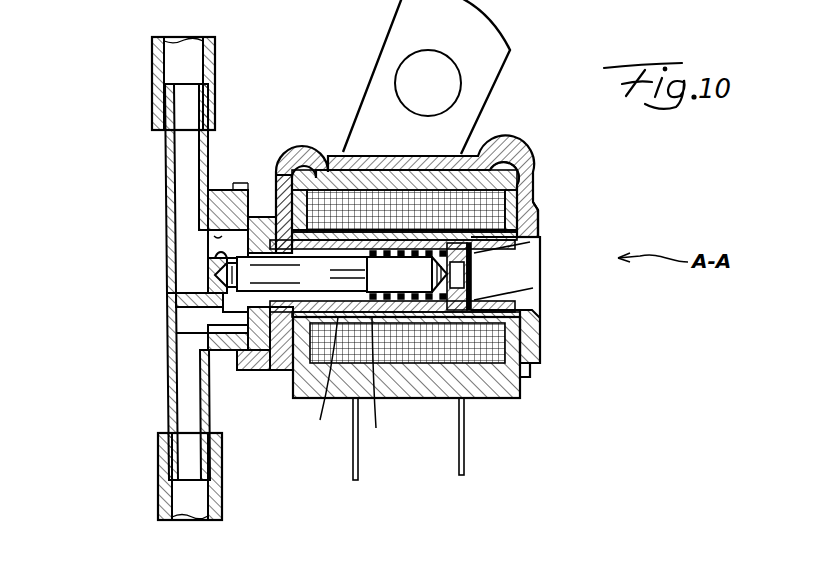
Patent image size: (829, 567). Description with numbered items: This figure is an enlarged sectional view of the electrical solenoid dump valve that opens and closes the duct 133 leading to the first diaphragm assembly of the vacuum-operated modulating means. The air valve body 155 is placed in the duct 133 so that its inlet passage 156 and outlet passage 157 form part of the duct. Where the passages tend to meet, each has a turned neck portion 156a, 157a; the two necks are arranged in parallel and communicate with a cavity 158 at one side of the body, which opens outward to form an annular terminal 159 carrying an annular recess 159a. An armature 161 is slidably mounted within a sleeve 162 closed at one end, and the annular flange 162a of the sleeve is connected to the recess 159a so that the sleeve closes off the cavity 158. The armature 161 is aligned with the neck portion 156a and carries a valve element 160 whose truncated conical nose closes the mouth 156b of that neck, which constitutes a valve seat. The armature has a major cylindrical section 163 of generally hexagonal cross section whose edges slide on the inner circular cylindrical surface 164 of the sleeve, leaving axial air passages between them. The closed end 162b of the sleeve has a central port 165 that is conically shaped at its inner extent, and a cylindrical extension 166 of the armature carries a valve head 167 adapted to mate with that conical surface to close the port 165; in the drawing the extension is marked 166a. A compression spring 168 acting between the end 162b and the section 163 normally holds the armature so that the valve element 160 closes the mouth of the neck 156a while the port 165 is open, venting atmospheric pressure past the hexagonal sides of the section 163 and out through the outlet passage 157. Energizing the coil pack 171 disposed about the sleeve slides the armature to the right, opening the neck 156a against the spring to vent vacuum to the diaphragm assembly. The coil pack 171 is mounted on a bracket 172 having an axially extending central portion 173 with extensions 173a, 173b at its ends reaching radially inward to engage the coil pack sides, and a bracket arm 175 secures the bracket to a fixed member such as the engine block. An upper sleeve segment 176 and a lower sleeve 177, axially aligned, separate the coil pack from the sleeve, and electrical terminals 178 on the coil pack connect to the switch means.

The duct 133 is at (153, 59).
The air valve body 155 is at (166, 157).
The inlet passage 156 is at (208, 208).
The turned neck portion of inlet passage 156a is at (213, 262).
The mouth of neck portion 156b is at (291, 274).
The outlet passage 157 is at (183, 404).
The turned neck portion of outlet passage 157a is at (205, 336).
The cavity 158 is at (218, 232).
The annular terminal 159 is at (268, 218).
The annular recess 159a is at (256, 372).
The valve element 160 is at (200, 289).
The armature 161 is at (319, 380).
The sleeve 162 is at (505, 300).
The annular flange 162a is at (212, 322).
The closed end of sleeve 162b is at (520, 250).
The major cylindrical section 163 is at (381, 385).
The inner circular cylindrical surface 164 is at (352, 248).
The central port 165 is at (510, 264).
The cylindrical extension 166 is at (415, 322).
The armature 166a is at (407, 275).
The valve head 167 is at (466, 303).
The compression spring 168 is at (470, 322).
The coil pack 171 is at (529, 182).
The bracket 172 is at (472, 150).
The axially extending central portion 173 is at (337, 162).
The extension 173a is at (529, 216).
The extension 173b is at (294, 230).
The bracket arm 175 is at (495, 42).
The upper sleeve segment 176 is at (394, 192).
The lower sleeve 177 is at (526, 206).
The electrical terminals 178 is at (461, 470).